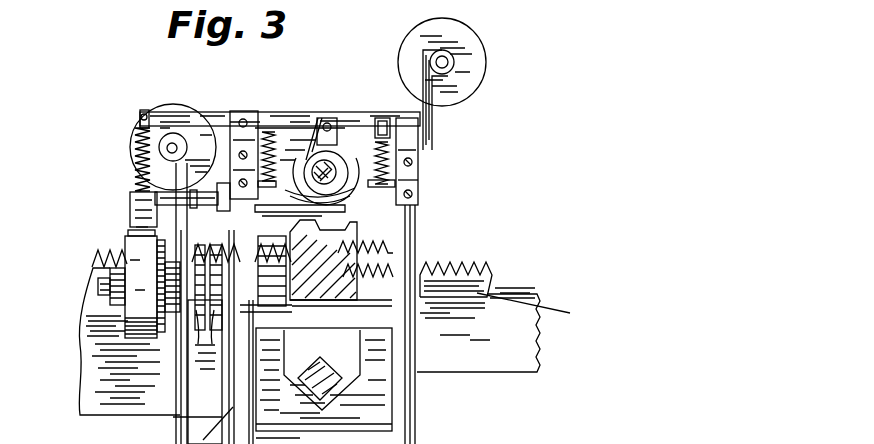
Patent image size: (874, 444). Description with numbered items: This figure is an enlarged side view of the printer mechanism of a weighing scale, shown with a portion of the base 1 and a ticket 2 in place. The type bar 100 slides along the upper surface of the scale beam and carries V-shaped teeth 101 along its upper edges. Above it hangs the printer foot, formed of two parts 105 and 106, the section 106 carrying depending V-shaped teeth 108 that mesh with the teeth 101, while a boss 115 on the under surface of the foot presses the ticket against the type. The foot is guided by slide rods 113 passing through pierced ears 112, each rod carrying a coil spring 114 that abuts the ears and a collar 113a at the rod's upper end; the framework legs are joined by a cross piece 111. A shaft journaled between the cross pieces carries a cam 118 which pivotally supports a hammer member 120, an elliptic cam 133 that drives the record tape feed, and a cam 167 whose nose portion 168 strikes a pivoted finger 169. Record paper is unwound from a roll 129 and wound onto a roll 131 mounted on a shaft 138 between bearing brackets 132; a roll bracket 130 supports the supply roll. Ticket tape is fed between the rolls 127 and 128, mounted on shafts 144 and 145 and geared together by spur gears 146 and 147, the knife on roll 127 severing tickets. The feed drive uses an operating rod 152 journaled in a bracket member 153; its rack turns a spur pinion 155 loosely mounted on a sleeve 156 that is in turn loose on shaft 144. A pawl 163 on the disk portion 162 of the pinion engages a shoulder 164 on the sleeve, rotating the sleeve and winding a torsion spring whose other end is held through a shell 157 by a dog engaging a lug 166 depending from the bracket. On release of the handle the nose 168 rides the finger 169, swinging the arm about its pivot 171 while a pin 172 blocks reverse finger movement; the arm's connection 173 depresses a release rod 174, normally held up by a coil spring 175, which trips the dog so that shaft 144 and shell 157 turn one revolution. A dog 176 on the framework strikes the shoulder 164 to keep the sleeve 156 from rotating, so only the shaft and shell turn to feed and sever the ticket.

The machine base 1 is at (478, 358).
The work piece 2 is at (323, 366).
The type bar 100 is at (400, 420).
The V-shaped teeth 101 is at (482, 265).
The printer foot part 105 is at (385, 238).
The printer foot section 106 is at (390, 245).
The depending V-shaped teeth 108 is at (405, 247).
The cross piece 111 is at (428, 200).
The pierced ears 112 is at (428, 183).
The slide rods 113 is at (268, 113).
The collars 113a is at (378, 125).
The coil springs 114 is at (342, 158).
The boss 115 is at (302, 230).
The cam 118 is at (338, 200).
The hammer member 120 is at (320, 117).
The roll 127 is at (341, 263).
The roll 128 is at (320, 244).
The roll 129 is at (455, 62).
The bracket 130 is at (433, 115).
The roll 131 is at (172, 136).
The bearing brackets 132 is at (138, 182).
The elliptic cam 133 is at (362, 152).
The shaft 138 is at (177, 144).
The shaft 144 is at (470, 293).
The shaft 145 is at (260, 242).
The spur gear 146 is at (268, 258).
The spur gear 147 is at (260, 303).
The operating rod 152 is at (176, 428).
The bracket member 153 is at (130, 203).
The spur pinion 155 is at (172, 322).
The sleeve 156 is at (240, 337).
The shell 157 is at (138, 322).
The disk portion 162 is at (196, 345).
The pawl 163 is at (207, 256).
The shoulder 164 is at (208, 375).
The lug 166 is at (128, 224).
The cam 167 is at (352, 150).
The nose portion 168 is at (335, 162).
The pivoted finger 169 is at (328, 146).
The pivot 171 is at (244, 119).
The pin 172 is at (328, 180).
The pivotal connection 173 is at (140, 117).
The release rod 174 is at (136, 141).
The coil spring 175 is at (136, 168).
The dog 176 is at (340, 160).